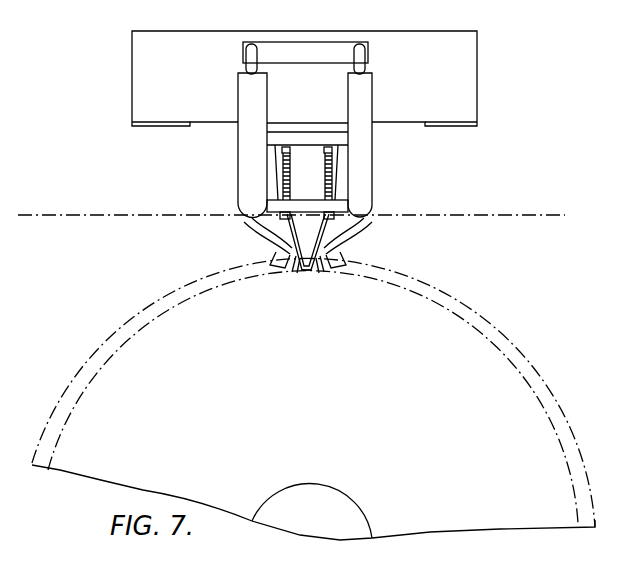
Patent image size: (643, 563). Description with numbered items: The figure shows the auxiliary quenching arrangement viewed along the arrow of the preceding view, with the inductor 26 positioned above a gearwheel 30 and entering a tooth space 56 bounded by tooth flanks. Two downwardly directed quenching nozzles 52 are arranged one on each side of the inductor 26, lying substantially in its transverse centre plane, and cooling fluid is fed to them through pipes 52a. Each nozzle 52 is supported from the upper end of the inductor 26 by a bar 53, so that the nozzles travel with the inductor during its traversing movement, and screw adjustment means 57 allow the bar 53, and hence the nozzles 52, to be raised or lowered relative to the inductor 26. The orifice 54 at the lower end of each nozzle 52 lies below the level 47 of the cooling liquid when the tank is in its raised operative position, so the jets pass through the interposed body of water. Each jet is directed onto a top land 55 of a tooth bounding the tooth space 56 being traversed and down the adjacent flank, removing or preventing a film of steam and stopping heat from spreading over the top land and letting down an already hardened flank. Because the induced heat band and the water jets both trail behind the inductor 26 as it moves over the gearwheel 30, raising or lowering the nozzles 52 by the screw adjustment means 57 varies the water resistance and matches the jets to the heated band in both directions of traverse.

The pipes 52a is at (245, 57).
The screw adjustment means 57 is at (287, 176).
The bar 53 is at (343, 207).
The inductor 26 is at (295, 223).
The nozzles 52 is at (291, 243).
The orifice 54 is at (283, 262).
The top land 55 is at (296, 265).
The tooth space 56 is at (307, 271).
The level of the cooling liquid 47 is at (119, 215).
The gearwheel 30 is at (186, 322).